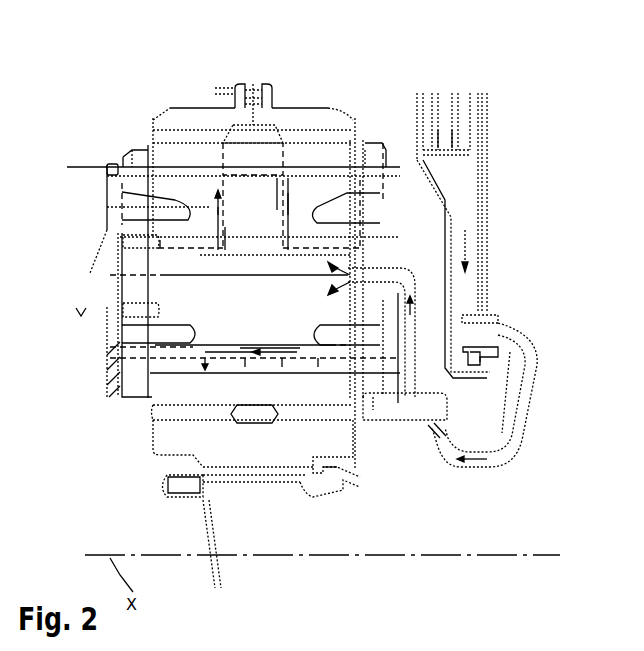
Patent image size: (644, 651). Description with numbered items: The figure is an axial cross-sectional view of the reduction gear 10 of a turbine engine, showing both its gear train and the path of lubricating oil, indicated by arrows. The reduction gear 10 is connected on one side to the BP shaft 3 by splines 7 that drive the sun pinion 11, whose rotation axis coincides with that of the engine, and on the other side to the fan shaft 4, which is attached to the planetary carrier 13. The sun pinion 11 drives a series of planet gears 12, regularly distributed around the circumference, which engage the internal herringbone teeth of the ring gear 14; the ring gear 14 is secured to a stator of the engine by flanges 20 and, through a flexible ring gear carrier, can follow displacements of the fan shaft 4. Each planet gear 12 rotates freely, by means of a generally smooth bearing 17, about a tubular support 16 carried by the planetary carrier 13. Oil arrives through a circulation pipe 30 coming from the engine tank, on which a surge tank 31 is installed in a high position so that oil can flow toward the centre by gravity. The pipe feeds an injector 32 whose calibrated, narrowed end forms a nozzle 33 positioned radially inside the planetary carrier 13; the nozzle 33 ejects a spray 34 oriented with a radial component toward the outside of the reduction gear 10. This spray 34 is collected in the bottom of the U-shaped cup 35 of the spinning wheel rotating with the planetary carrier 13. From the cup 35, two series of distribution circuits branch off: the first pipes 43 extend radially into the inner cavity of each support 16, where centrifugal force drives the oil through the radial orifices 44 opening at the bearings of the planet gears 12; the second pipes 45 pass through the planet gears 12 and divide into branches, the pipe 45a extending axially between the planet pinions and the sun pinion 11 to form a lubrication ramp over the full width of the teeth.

The reduction gear 10 is at (135, 82).
The flanges 20 is at (243, 82).
The bearing 17 is at (190, 157).
The ring gear 14 is at (336, 117).
The planet gears 12 is at (350, 140).
The planetary carrier 13 is at (128, 148).
The fan shaft 4 is at (82, 166).
The circulation pipe 30 is at (470, 112).
The surge tank 31 is at (480, 197).
The orifices 44 is at (208, 242).
The tubular support 16 is at (248, 222).
The first pipes 43 is at (405, 290).
The second pipes 45 is at (400, 342).
The pipe 45a is at (245, 330).
The injector 32 is at (530, 345).
The cup 35 is at (452, 417).
The sun pinion 11 is at (168, 433).
The spray 34 is at (430, 438).
The nozzle 33 is at (448, 470).
The splines 7 is at (247, 483).
The BP shaft 3 is at (327, 487).